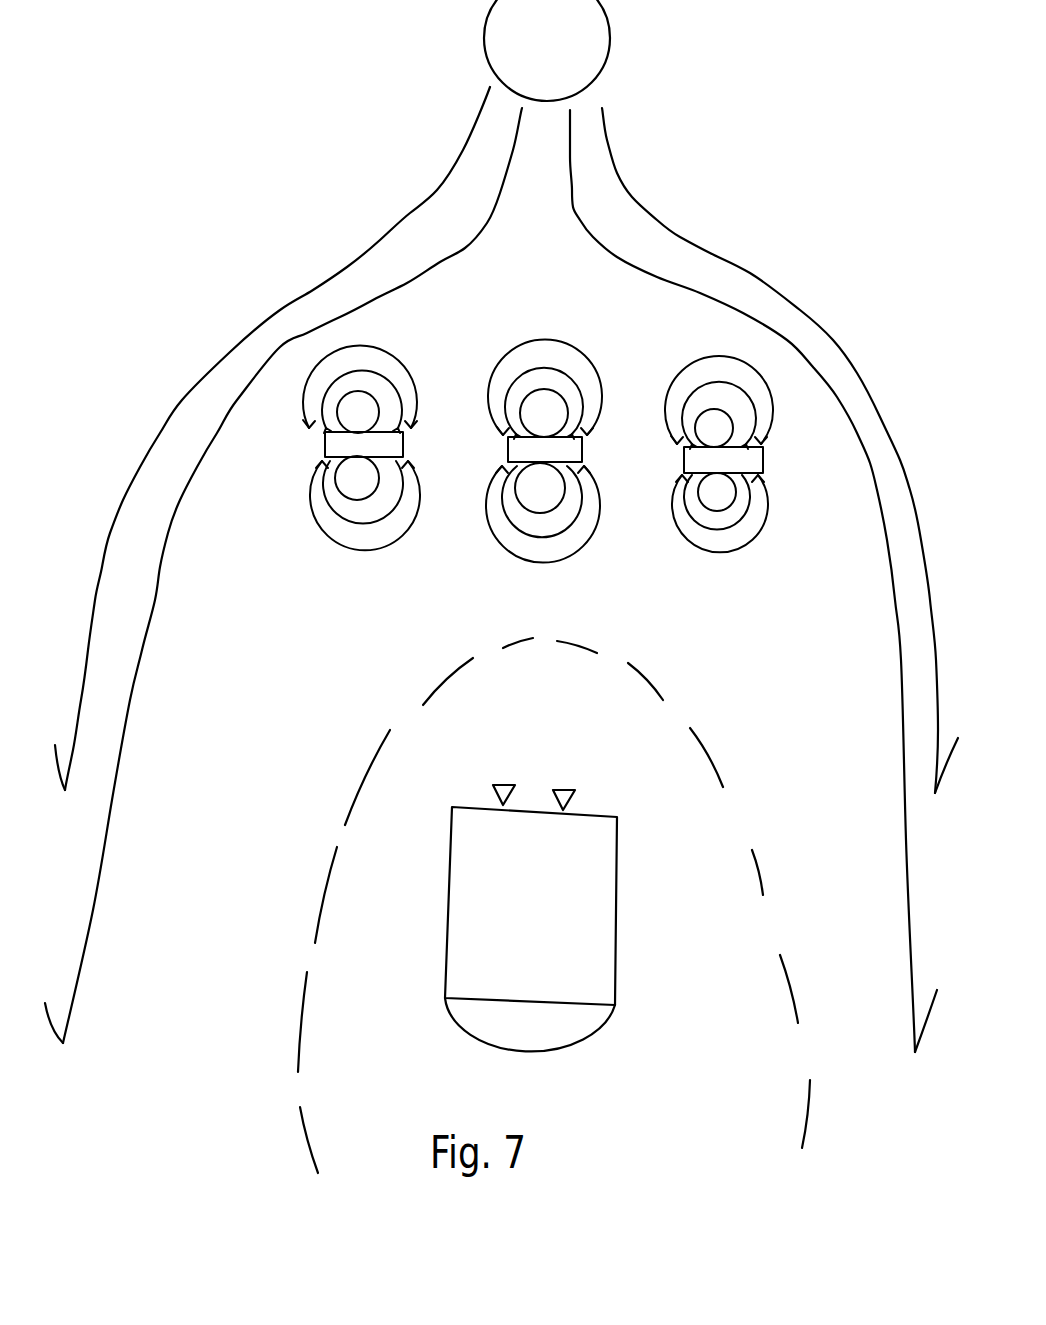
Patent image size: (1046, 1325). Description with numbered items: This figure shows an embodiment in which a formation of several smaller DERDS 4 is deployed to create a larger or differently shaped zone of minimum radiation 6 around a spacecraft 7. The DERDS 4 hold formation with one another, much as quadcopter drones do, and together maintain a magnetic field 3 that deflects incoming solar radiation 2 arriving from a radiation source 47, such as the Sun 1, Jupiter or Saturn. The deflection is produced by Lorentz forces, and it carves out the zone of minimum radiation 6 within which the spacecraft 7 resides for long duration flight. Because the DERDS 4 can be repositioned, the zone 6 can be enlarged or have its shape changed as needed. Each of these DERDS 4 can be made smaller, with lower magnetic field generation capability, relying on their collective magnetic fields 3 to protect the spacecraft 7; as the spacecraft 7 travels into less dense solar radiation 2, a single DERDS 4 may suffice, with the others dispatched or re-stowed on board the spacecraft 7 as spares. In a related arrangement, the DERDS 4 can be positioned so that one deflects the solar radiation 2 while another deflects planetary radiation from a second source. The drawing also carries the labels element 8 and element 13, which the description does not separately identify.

The Sun 1 is at (480, 62).
The solar radiation 2 is at (697, 242).
The magnetic field 3 is at (780, 407).
The DERDS 4 is at (320, 443).
The zone of minimum radiation 6 is at (380, 737).
The spacecraft 7 is at (445, 963).
The magnet unit 8 is at (387, 345).
The magnet unit 13 is at (578, 352).
The radiation source 47 is at (612, 37).